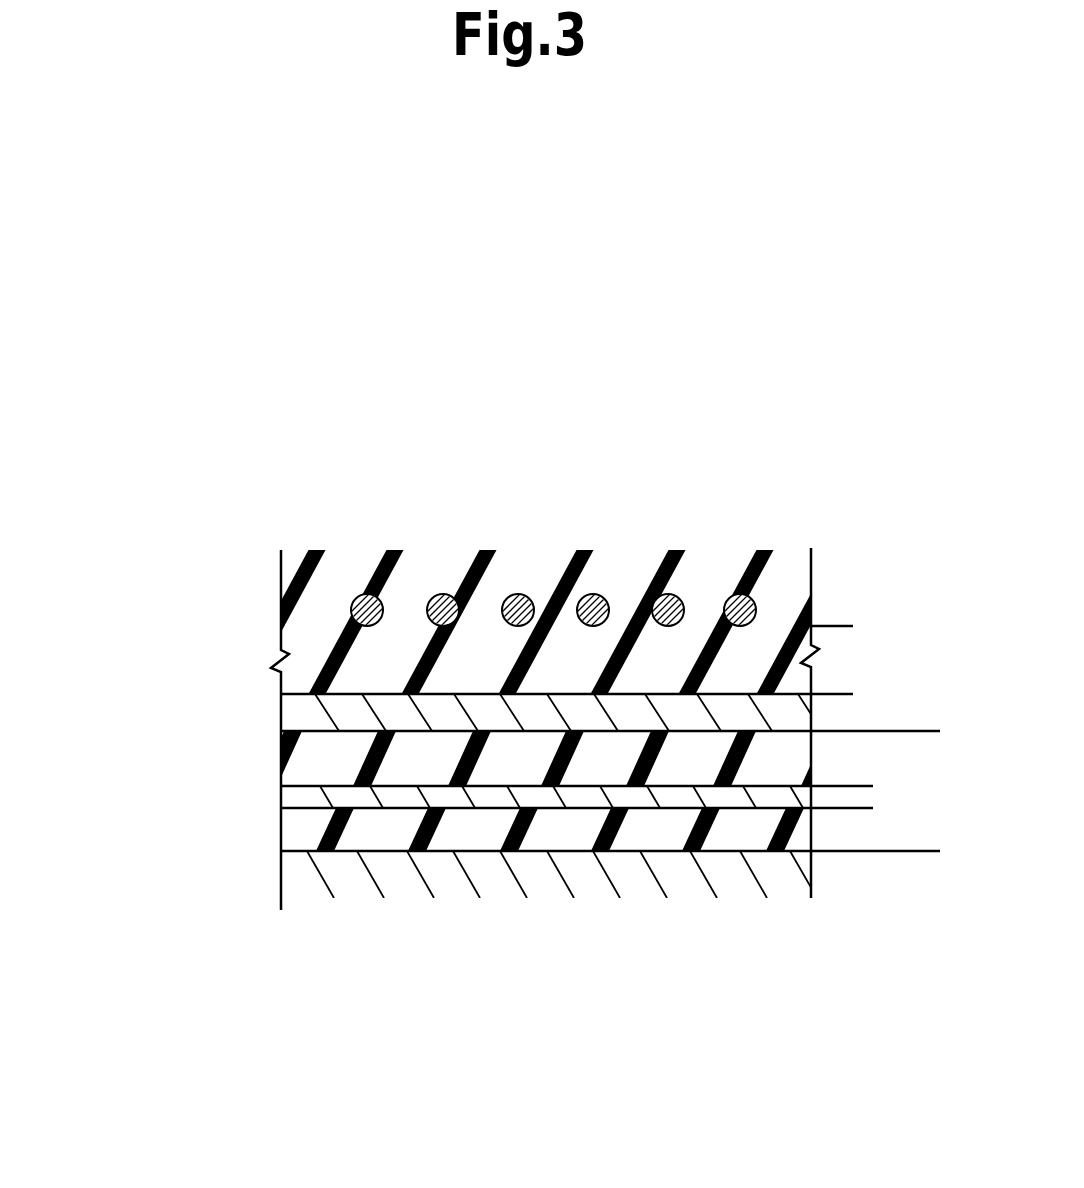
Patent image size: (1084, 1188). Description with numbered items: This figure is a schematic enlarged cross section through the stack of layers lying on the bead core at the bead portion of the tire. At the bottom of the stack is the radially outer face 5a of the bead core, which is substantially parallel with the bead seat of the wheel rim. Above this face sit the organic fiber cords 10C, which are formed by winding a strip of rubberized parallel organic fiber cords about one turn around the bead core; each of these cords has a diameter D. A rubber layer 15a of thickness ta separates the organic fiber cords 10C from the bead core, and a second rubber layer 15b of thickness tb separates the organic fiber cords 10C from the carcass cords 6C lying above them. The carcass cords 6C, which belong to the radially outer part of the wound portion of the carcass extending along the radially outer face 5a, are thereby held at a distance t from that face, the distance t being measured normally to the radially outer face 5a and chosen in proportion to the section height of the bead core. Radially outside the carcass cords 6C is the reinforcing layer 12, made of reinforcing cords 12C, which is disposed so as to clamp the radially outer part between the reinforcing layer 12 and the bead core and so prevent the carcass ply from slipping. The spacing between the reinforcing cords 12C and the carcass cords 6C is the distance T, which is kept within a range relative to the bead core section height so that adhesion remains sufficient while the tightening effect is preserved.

The reinforcing layer 12 is at (603, 415).
The reinforcing cords 12C is at (356, 597).
The carcass cords 6C is at (282, 712).
The organic fiber cords 10C is at (290, 801).
The radially outer face 5a is at (292, 837).
The rubber layer 15a is at (796, 833).
The rubber layer 15b is at (797, 756).
The distance T is at (848, 626).
The distance t is at (928, 731).
The diameter D is at (868, 760).
The thickness ta is at (662, 808).
The thickness tb is at (611, 731).